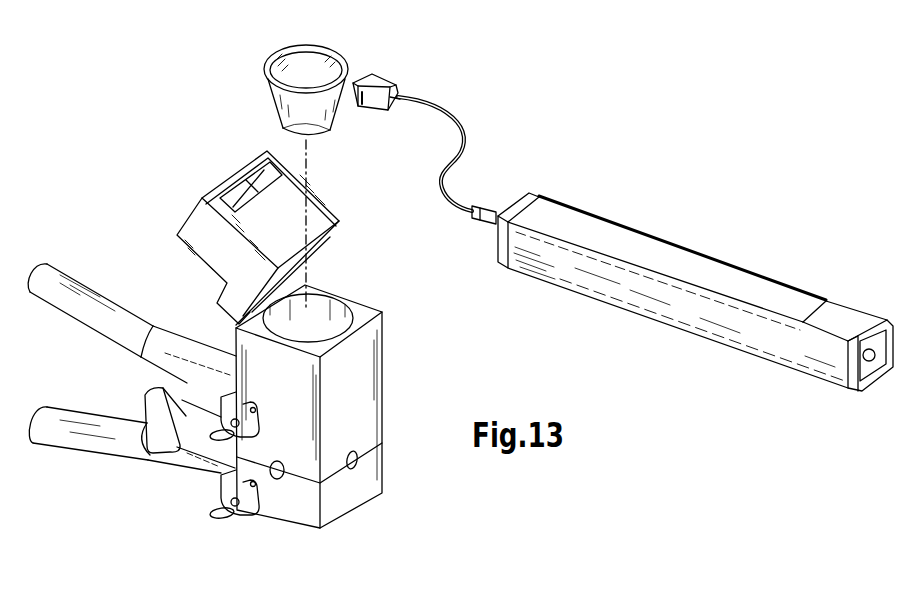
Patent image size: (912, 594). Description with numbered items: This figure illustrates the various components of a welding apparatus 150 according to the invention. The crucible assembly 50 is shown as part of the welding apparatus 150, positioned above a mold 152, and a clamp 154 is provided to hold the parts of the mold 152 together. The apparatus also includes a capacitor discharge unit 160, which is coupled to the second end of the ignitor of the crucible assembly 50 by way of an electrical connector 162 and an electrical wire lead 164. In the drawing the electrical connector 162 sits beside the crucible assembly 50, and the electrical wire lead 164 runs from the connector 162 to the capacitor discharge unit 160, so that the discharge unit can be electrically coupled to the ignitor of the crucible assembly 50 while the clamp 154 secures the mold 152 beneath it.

The welding apparatus 150 is at (186, 64).
The crucible assembly 50 is at (332, 47).
The electrical connector 162 is at (382, 78).
The electrical wire lead 164 is at (457, 122).
The capacitor discharge unit 160 is at (633, 252).
The mold 152 is at (383, 348).
The clamp 154 is at (67, 271).